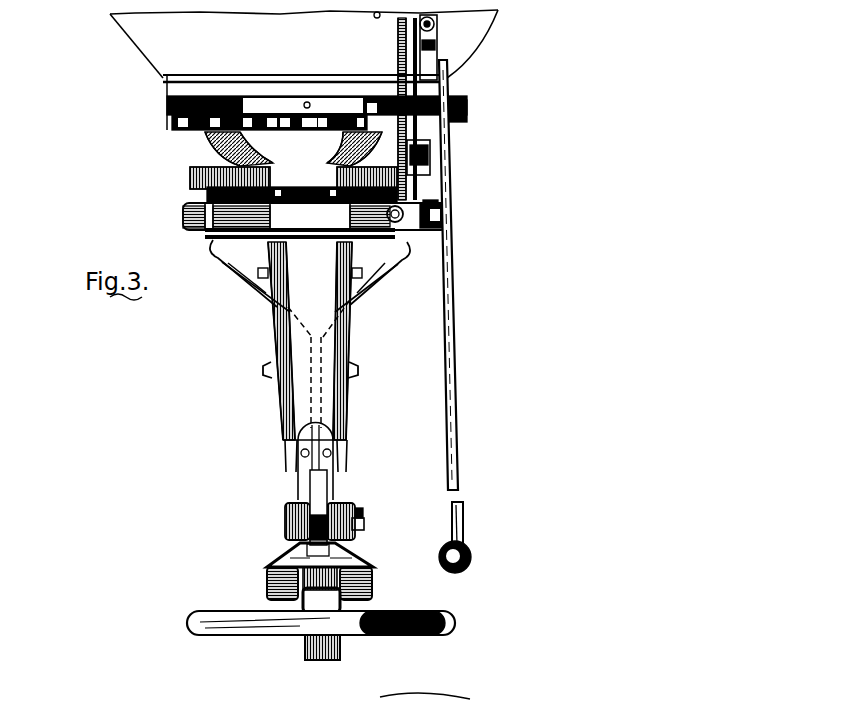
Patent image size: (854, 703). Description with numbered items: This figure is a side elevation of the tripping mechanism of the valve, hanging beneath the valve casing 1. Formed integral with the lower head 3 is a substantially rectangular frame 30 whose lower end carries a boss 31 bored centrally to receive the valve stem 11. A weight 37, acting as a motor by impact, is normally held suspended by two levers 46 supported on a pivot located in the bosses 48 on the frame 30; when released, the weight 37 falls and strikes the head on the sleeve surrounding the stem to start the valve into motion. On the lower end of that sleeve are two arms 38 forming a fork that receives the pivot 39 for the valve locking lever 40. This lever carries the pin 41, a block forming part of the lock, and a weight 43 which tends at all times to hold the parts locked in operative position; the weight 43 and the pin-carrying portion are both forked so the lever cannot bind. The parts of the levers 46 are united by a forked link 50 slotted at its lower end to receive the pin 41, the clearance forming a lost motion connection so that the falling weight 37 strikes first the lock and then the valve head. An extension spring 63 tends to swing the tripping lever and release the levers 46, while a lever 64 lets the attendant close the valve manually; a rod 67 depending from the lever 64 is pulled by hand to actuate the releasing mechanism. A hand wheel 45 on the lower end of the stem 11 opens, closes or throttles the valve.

The valve casing 1 is at (147, 50).
The lower head 3 is at (165, 110).
The valve stem 11 is at (303, 603).
The frame 30 is at (330, 343).
The boss 31 is at (348, 453).
The weight 37 is at (237, 163).
The arms 38 is at (297, 503).
The pivot 39 is at (360, 526).
The valve locking lever 40 is at (302, 467).
The pin 41 is at (363, 514).
The weight 43 is at (267, 580).
The hand wheel 45 is at (457, 620).
The levers 46 is at (190, 203).
The bosses 48 is at (217, 248).
The forked link 50 is at (368, 285).
The extension spring 63 is at (398, 48).
The lever 64 is at (438, 62).
The rod 67 is at (455, 343).